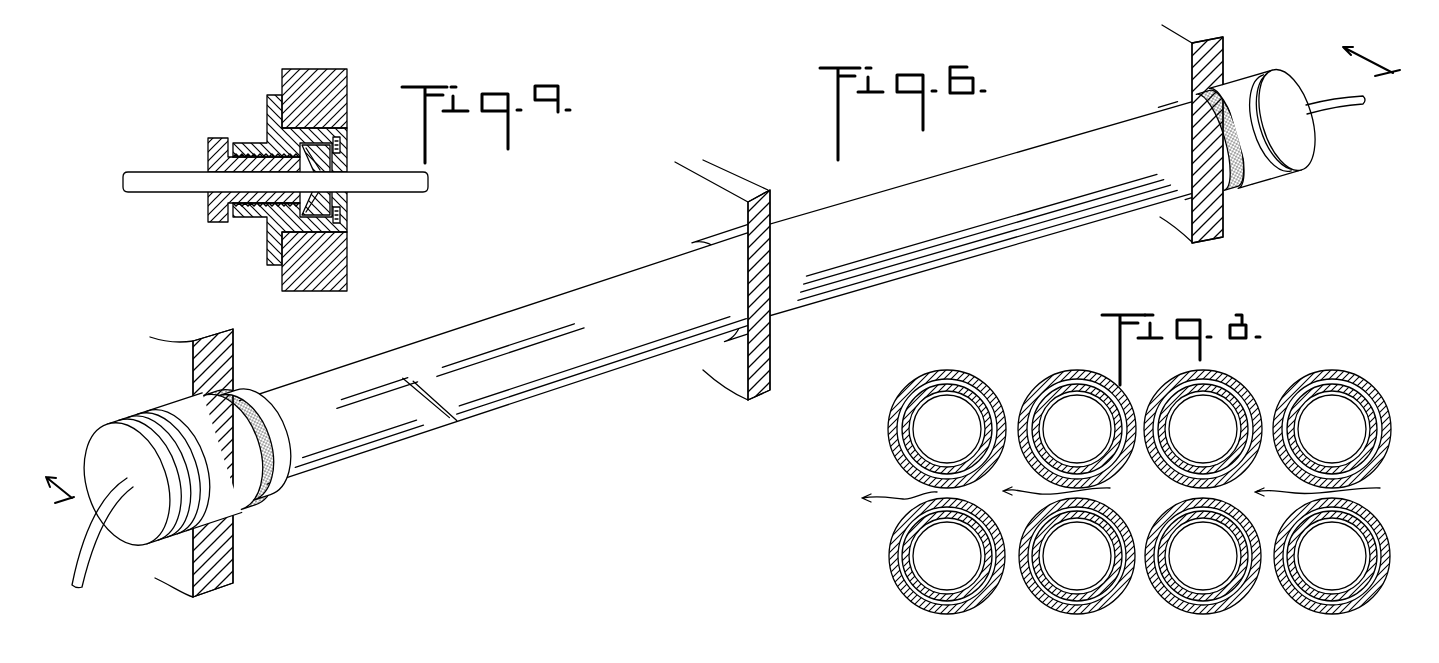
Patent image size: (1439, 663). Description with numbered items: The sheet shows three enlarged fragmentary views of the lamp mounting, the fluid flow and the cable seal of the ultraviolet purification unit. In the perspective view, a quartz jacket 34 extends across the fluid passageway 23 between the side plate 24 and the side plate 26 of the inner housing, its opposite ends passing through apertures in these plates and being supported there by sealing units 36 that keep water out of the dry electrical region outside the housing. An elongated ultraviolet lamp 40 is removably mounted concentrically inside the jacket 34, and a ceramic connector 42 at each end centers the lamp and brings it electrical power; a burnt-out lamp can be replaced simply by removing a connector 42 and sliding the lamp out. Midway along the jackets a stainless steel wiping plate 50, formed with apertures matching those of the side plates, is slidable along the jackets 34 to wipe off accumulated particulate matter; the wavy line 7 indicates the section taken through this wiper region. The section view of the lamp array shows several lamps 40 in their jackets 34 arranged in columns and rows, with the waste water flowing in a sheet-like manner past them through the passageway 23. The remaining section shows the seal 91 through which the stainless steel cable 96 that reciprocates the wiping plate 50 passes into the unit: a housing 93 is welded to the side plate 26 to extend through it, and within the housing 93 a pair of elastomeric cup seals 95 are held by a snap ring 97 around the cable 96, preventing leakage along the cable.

In FIG. 6, the section line 7- 7 is at (726, 288).
In FIG. 8, the fluid passageway 23 is at (1402, 456).
In FIG. 6, the side plate 24 is at (1219, 220).
In FIG. 6, the side plate 26 is at (232, 350).
In FIG. 9, the side plate 26 is at (336, 87).
In FIG. 6, the quartz jacket 34 is at (931, 251).
In FIG. 8, the quartz jacket 34 is at (1332, 376).
In FIG. 6, the sealing unit 36 is at (137, 385).
In FIG. 8, the ultraviolet lamp 40 is at (1368, 387).
In FIG. 6, the ceramic connector 42 is at (103, 433).
In FIG. 6, the wiping plate 50 is at (751, 184).
In FIG. 9, the seal 91 is at (233, 97).
In FIG. 9, the housing 93 is at (212, 214).
In FIG. 9, the cup seal 95 is at (345, 206).
In FIG. 9, the cable 96 is at (155, 172).
In FIG. 9, the snap ring 97 is at (343, 219).